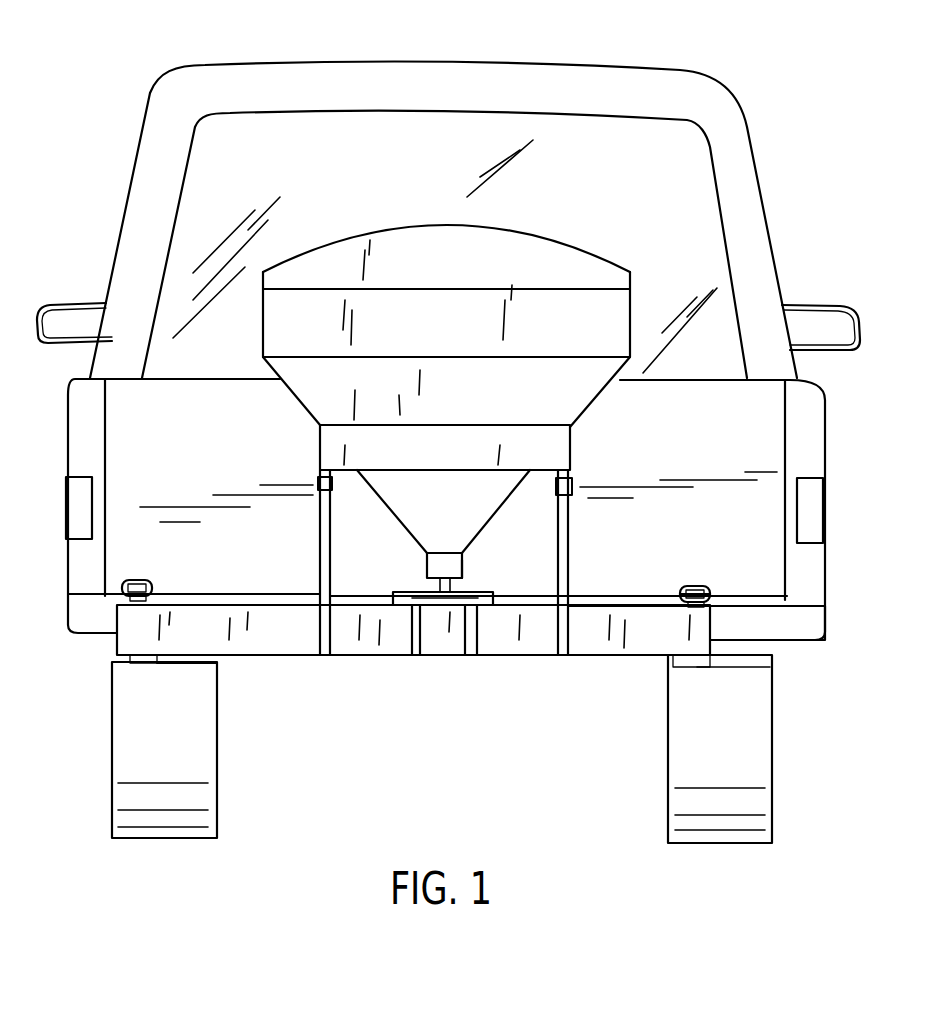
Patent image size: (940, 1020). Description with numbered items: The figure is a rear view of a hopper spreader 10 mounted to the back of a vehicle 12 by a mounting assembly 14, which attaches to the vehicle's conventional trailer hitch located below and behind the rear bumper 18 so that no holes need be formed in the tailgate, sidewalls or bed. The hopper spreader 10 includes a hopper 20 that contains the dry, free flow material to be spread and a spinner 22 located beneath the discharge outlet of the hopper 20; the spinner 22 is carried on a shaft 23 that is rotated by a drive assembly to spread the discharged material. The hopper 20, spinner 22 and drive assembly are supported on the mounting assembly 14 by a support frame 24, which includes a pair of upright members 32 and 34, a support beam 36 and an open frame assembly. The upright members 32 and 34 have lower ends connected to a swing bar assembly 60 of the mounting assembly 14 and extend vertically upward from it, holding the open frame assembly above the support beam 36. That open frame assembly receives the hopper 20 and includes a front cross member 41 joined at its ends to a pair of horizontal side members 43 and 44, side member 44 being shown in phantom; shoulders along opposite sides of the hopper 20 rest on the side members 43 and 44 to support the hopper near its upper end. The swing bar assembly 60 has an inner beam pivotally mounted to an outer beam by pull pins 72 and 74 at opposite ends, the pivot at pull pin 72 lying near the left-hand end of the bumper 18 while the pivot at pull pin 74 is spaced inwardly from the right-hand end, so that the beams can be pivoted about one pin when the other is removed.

The hopper spreader 10 is at (613, 213).
The vehicle 12 is at (753, 182).
The mounting assembly 14 is at (643, 583).
The rear bumper 18 is at (813, 617).
The hopper 20 is at (637, 307).
The spinner 22 is at (412, 590).
The shaft 23 is at (480, 577).
The support frame 24 is at (320, 515).
The upright member 32 is at (570, 543).
The upright member 34 is at (322, 550).
The support beam 36 is at (412, 640).
The front cross member 41 is at (387, 432).
The horizontal side member 43 is at (583, 472).
The horizontal side member 44 is at (323, 478).
The swing bar assembly 60 is at (280, 630).
The pull pin 72 is at (137, 580).
The pull pin 74 is at (703, 583).